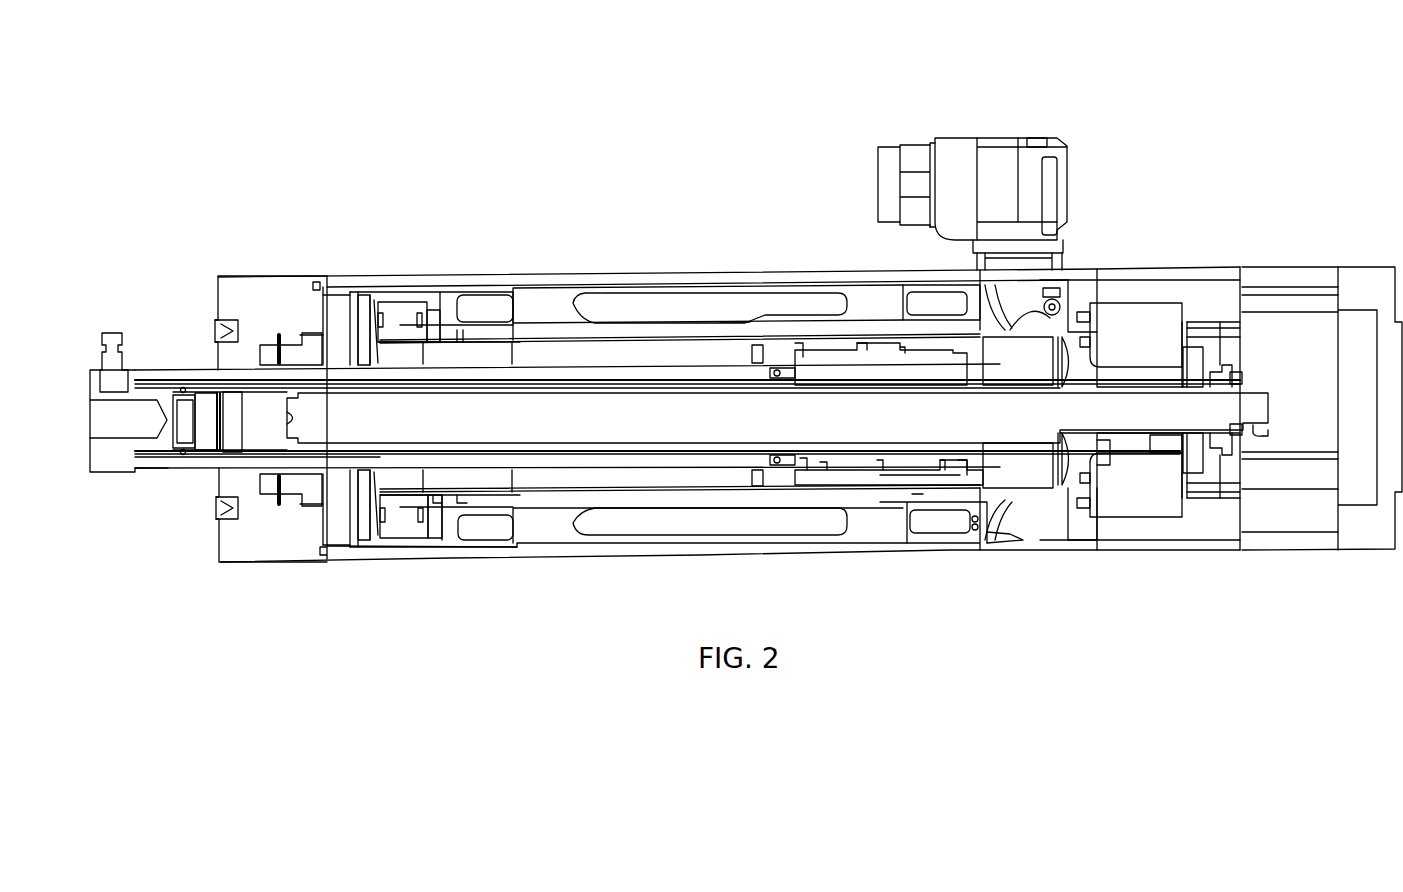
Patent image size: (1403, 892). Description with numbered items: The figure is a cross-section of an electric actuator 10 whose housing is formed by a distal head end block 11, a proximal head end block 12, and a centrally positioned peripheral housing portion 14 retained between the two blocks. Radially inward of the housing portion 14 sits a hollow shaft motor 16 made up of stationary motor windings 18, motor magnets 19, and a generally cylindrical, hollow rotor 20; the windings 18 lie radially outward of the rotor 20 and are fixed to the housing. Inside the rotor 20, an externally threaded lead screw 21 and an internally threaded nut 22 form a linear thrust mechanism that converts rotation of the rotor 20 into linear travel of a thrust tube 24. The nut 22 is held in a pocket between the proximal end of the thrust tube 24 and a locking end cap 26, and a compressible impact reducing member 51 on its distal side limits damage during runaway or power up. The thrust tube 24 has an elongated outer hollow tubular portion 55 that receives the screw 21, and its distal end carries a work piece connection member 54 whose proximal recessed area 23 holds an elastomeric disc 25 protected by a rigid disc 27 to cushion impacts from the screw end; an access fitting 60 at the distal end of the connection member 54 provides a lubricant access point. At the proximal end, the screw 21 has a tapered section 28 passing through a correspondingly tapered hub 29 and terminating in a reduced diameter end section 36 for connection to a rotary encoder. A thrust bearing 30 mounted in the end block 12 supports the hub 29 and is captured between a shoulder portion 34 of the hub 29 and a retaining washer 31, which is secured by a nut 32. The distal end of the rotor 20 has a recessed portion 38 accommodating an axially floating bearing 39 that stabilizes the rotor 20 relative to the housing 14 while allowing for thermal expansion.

The actuator 10 is at (492, 112).
The distal head end block 11 is at (282, 563).
The proximal head end block 12 is at (1155, 268).
The peripheral housing portion 14 is at (468, 560).
The hollow shaft motor 16 is at (910, 527).
The motor windings 18 is at (575, 553).
The motor magnets 19 is at (823, 500).
The rotor 20 is at (1048, 480).
The lead screw 21 is at (507, 392).
The nut 22 is at (830, 350).
The recessed area 23 is at (185, 432).
The thrust tube 24 is at (175, 365).
The elastomeric disc 25 is at (210, 430).
The locking end cap 26 is at (990, 343).
The rigid disc 27 is at (210, 430).
The tapered section 28 is at (1155, 433).
The hub 29 is at (1125, 455).
The thrust bearing 30 is at (1178, 303).
The retaining washer 31 is at (1230, 350).
The nut 32 is at (1232, 374).
The shoulder portion 34 is at (1097, 357).
The reduced diameter end section 36 is at (1266, 428).
The recessed portion 38 is at (400, 342).
The bearing 39 is at (400, 340).
The impact reducing member 51 is at (753, 467).
The work piece connection member 54 is at (83, 475).
The outer hollow tubular portion 55 is at (505, 468).
The access fitting 60 is at (97, 332).